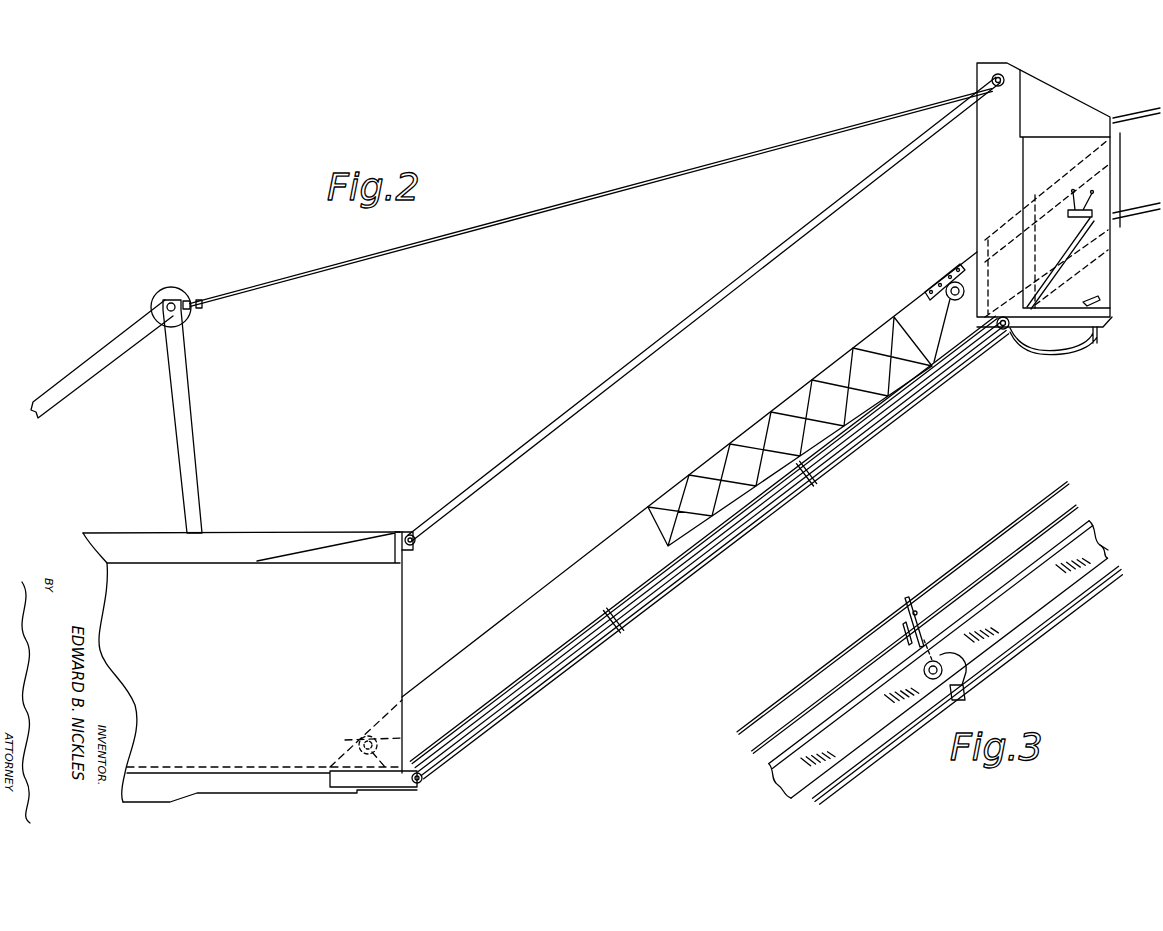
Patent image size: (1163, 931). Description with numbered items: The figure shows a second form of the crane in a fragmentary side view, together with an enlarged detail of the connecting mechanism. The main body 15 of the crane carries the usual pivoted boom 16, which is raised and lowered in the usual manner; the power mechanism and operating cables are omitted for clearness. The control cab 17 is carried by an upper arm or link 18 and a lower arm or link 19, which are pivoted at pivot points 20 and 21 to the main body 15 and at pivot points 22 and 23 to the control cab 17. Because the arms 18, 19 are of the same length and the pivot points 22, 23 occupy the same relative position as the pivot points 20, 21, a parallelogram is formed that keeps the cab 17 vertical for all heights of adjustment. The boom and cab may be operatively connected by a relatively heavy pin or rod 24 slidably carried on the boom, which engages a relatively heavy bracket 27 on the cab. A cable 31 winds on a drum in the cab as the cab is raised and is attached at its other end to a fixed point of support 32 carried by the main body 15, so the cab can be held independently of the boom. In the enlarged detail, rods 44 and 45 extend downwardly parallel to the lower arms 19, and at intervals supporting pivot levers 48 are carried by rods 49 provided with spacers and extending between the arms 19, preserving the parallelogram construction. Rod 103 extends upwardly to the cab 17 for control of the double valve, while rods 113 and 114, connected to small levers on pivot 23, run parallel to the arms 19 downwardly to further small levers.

In FIG. 2, the main body 15 is at (385, 652).
In FIG. 2, the pivoted boom 16 is at (556, 572).
In FIG. 2, the control cab 17 is at (976, 185).
In FIG. 2, the upper arm or link 18 is at (762, 264).
In FIG. 2, the lower arm or link 19 is at (910, 392).
In FIG. 3, the lower arm or link 19 is at (785, 775).
In FIG. 2, the pivot point 20 is at (408, 532).
In FIG. 2, the pivot point 21 is at (423, 782).
In FIG. 2, the pivot point 22 is at (985, 76).
In FIG. 2, the pivot point 23 is at (1005, 330).
In FIG. 2, the pin or rod 24 is at (946, 292).
In FIG. 2, the bracket 27 is at (940, 264).
In FIG. 2, the cable 31 is at (580, 208).
In FIG. 2, the fixed point of support 32 is at (173, 303).
In FIG. 3, the rod 44 is at (1043, 494).
In FIG. 3, the rod 45 is at (1008, 528).
In FIG. 2, the supporting pivot lever 48 is at (817, 474).
In FIG. 3, the supporting pivot lever 48 is at (898, 642).
In FIG. 3, the rod 49 is at (950, 680).
In FIG. 3, the rod 103 is at (1024, 650).
In FIG. 3, the rod 113 is at (1114, 560).
In FIG. 3, the rod 114 is at (1062, 590).